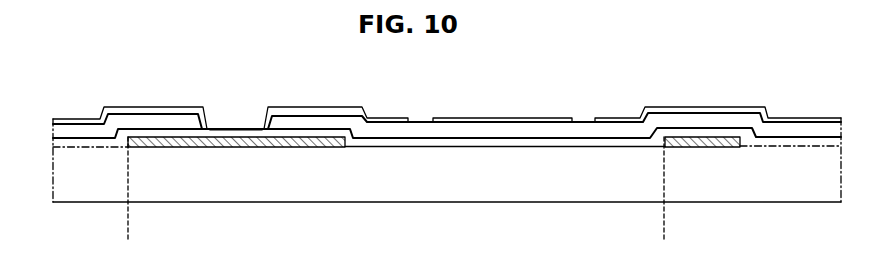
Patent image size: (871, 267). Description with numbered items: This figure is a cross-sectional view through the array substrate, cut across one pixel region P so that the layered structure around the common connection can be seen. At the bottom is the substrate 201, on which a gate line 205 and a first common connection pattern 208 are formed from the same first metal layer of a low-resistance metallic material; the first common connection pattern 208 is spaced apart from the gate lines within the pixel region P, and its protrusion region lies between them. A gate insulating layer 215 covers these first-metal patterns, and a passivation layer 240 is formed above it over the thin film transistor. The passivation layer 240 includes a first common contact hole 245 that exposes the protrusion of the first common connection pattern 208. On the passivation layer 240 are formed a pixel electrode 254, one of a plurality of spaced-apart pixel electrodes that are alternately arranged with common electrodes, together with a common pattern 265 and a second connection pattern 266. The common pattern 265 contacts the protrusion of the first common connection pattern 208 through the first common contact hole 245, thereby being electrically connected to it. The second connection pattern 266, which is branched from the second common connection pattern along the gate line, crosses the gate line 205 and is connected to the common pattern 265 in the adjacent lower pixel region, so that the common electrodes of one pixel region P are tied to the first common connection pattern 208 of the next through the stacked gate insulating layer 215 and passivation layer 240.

The substrate 201 is at (834, 195).
The gate line 205 is at (705, 147).
The first common connection pattern 208 is at (230, 147).
The gate insulating layer 215 is at (443, 146).
The passivation layer 240 is at (510, 127).
The first common contact hole 245 is at (236, 108).
The pixel electrode 254 is at (508, 118).
The common pattern 265 is at (383, 118).
The second connection pattern 266 is at (78, 118).
The pixel region P is at (664, 230).